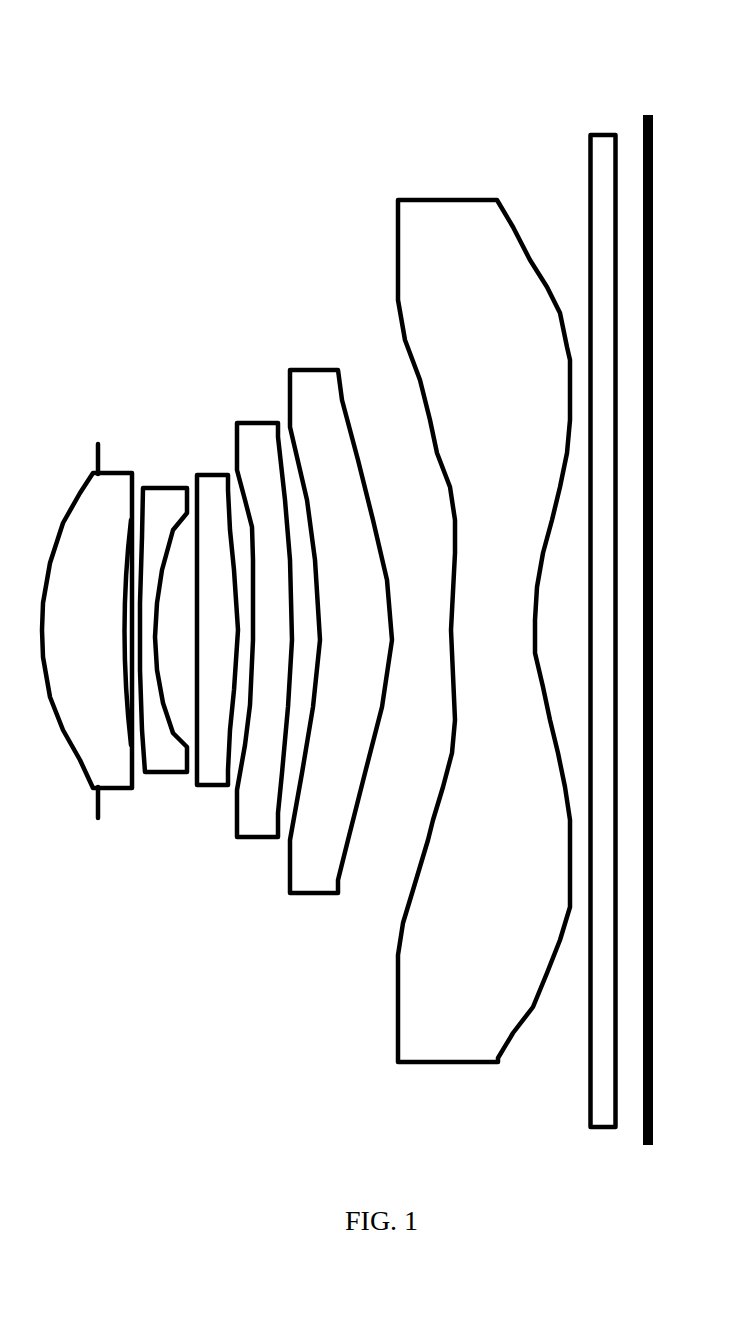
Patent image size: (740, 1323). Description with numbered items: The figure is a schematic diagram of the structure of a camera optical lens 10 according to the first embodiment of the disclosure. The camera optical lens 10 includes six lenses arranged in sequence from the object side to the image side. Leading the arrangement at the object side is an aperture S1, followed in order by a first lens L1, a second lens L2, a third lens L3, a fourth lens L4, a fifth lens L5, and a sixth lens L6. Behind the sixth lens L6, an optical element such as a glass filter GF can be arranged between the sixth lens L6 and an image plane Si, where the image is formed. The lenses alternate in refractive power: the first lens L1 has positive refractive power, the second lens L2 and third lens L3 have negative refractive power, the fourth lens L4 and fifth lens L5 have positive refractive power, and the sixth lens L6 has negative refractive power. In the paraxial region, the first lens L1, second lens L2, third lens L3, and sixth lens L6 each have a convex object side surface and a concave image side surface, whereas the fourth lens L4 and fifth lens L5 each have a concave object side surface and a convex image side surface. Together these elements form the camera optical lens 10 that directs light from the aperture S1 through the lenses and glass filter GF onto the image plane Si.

The camera optical lens 10 is at (369, 36).
The aperture S1 is at (94, 615).
The first lens L1 is at (87, 614).
The second lens L2 is at (163, 614).
The third lens L3 is at (217, 614).
The fourth lens L4 is at (262, 614).
The fifth lens L5 is at (341, 615).
The sixth lens L6 is at (484, 614).
The glass filter GF is at (605, 611).
The image plane Si is at (647, 614).